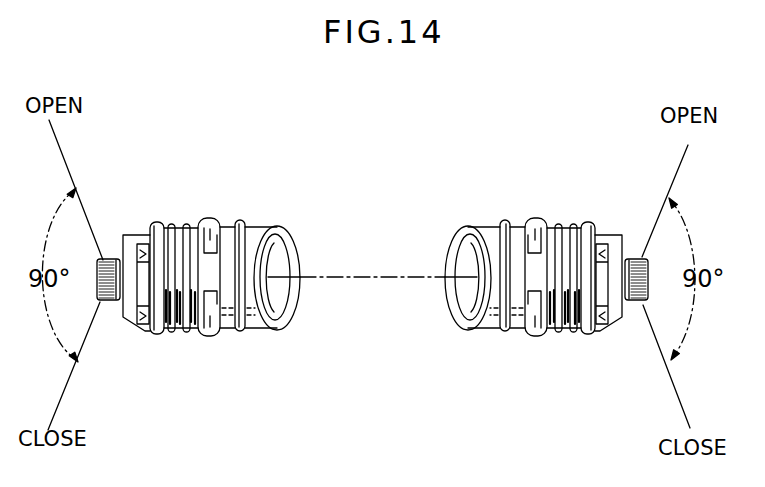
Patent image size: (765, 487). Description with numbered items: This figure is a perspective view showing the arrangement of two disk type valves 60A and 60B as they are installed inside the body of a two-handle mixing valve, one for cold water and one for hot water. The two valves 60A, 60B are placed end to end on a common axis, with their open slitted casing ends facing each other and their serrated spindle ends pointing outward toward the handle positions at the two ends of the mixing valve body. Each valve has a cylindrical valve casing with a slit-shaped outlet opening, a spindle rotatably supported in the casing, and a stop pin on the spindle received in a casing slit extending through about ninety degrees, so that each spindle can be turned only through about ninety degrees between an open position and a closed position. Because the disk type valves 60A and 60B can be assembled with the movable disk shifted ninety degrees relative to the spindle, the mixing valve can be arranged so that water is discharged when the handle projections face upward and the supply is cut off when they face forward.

The disk type valve 60A is at (532, 214).
The disk type valve 60B is at (214, 214).